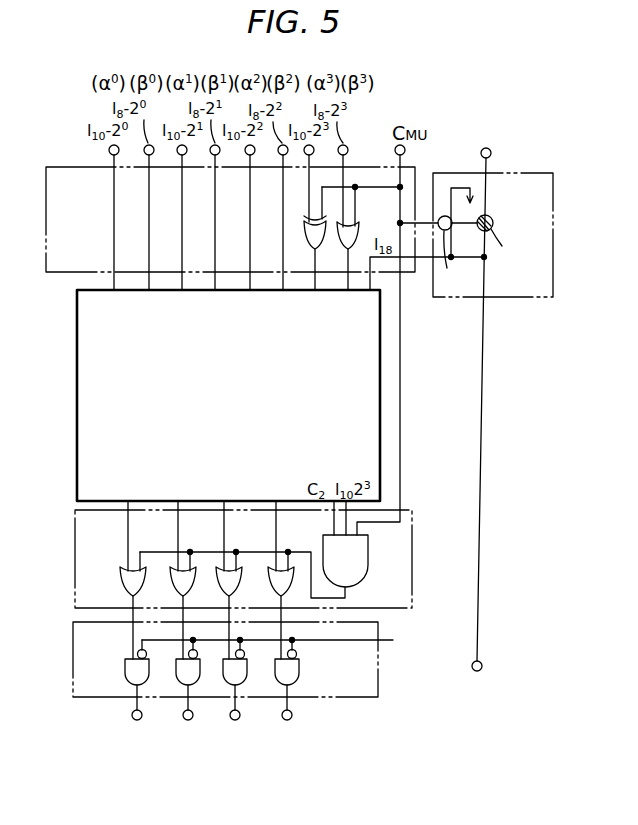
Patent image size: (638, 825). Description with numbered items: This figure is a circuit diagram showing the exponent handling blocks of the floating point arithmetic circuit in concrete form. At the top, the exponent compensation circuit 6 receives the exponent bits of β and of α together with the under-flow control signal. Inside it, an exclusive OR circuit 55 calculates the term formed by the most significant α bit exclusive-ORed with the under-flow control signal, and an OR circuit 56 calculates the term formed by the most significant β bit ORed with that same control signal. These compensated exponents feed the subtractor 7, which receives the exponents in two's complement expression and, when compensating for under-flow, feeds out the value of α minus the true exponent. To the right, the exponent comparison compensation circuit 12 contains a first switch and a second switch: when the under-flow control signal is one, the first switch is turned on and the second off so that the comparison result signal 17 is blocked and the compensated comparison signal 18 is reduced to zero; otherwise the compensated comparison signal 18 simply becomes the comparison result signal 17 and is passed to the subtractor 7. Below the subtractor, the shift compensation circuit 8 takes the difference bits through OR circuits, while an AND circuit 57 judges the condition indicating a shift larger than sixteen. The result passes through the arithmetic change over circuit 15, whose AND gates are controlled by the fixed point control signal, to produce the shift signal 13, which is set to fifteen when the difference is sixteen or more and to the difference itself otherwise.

The exponent compensation circuit 6 is at (225, 199).
The subtractor 7 is at (76, 377).
The shift compensation circuit 8 is at (218, 555).
The exponent comparison compensation circuit 12 is at (531, 171).
The shift signal 13 is at (209, 743).
The arithmetic change over circuit 15 is at (72, 660).
The result of comparison signal 17 is at (487, 395).
The compensated comparison signal 18 is at (481, 682).
The exclusive OR circuit 55 is at (308, 238).
The OR circuit 56 is at (343, 238).
The AND circuit 57 is at (368, 567).